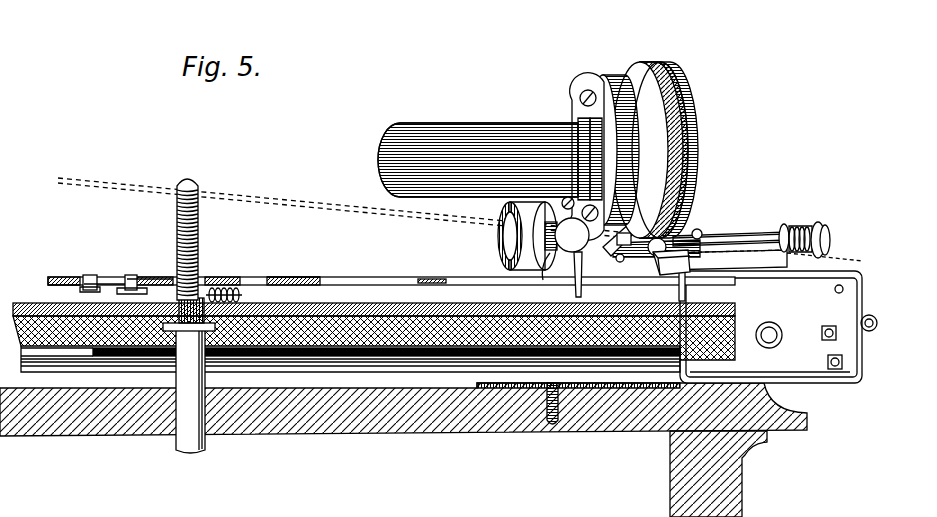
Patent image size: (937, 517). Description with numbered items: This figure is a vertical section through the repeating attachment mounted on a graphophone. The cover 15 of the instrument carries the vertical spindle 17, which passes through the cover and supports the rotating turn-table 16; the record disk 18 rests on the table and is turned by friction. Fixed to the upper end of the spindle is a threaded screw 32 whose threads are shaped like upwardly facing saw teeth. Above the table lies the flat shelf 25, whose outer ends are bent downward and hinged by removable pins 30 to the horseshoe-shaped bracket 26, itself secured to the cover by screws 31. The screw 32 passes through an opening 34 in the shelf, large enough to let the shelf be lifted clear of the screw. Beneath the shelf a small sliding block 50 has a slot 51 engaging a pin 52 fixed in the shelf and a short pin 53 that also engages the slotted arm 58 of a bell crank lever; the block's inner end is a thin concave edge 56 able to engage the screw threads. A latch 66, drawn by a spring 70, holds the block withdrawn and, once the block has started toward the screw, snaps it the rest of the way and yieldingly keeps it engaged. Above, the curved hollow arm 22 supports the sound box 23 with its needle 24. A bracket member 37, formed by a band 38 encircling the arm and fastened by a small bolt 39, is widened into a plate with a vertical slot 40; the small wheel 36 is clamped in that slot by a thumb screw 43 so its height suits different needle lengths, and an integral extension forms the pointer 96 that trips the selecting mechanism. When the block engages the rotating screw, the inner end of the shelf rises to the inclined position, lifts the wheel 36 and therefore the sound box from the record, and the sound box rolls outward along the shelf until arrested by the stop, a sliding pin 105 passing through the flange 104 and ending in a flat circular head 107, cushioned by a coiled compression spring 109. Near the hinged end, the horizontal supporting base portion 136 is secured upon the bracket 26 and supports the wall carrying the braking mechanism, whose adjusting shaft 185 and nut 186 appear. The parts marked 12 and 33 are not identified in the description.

The standard 12 is at (733, 476).
The cover 15 is at (509, 424).
The turn-table 16 is at (411, 340).
The spindle 17 is at (186, 426).
The record disk 18 is at (23, 306).
The curved hollow arm 22 is at (413, 136).
The sound box 23 is at (608, 73).
The needle 24 is at (690, 297).
The shelf 25 is at (344, 212).
The horseshoe-shaped bracket 26 is at (822, 385).
The removable pins 30 is at (878, 323).
The screws 31 is at (559, 421).
The screw 32 is at (201, 246).
The nut 33 is at (202, 281).
The opening 34 is at (165, 279).
The wheel 36 is at (500, 236).
The bracket member 37 is at (545, 222).
The band 38 is at (568, 124).
The bolt 39 is at (563, 197).
The vertical slot 40 is at (543, 280).
The thumb screw 43 is at (572, 224).
The sliding block 50 is at (100, 292).
The slot 51 is at (64, 286).
The pin 52 is at (90, 276).
The short pin 53 is at (130, 274).
The concave edge 56 is at (152, 294).
The arm 58 is at (125, 283).
The latch 66 is at (256, 277).
The spring 70 is at (244, 298).
The pointer 96 is at (583, 282).
The flange 104 is at (781, 232).
The sliding pin 105 is at (727, 238).
The circular head 107 is at (828, 236).
The compression spring 109 is at (800, 226).
The supporting base portion 136 is at (795, 363).
The shaft 185 is at (769, 322).
The nut 186 is at (784, 334).